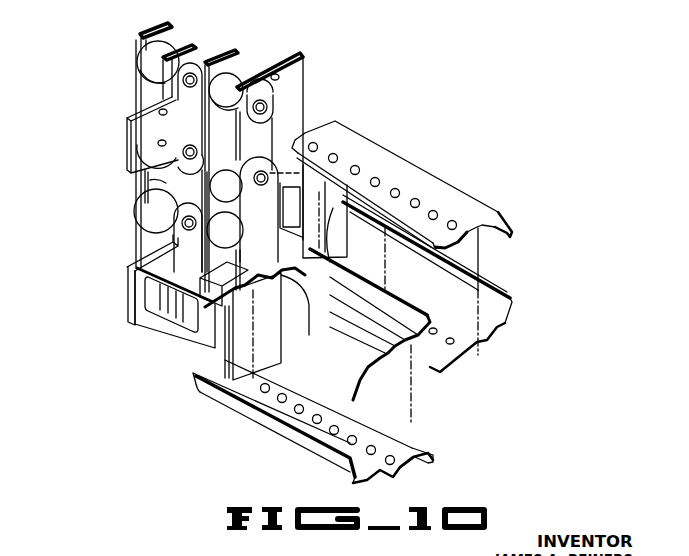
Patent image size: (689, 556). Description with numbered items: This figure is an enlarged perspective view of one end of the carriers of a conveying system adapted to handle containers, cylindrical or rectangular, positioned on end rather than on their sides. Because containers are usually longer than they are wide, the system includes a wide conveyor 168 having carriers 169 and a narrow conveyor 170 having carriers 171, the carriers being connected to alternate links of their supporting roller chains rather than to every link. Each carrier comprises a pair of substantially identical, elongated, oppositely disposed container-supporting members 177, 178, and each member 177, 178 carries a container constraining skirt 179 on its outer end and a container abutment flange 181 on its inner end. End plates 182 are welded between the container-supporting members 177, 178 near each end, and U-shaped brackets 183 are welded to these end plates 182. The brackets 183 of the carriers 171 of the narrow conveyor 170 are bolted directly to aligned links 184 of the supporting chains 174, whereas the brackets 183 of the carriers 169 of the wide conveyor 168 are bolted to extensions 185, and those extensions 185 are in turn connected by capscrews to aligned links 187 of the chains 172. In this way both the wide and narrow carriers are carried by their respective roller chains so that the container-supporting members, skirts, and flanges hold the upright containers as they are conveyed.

The wide conveyor 168 is at (216, 402).
The carriers 169 is at (412, 350).
The narrow conveyor 170 is at (360, 135).
The carriers 171 is at (470, 190).
The chains 172 is at (157, 25).
The supporting chains 174 is at (233, 47).
The container-supporting member 177 is at (388, 162).
The container-supporting member 178 is at (478, 328).
The container constraining skirt 179 is at (490, 287).
The container abutment flange 181 is at (410, 224).
The end plates 182 is at (267, 323).
The U-shaped brackets 183 is at (347, 272).
The aligned links 184 is at (300, 64).
The extensions 185 is at (171, 269).
The aligned links 187 is at (137, 144).